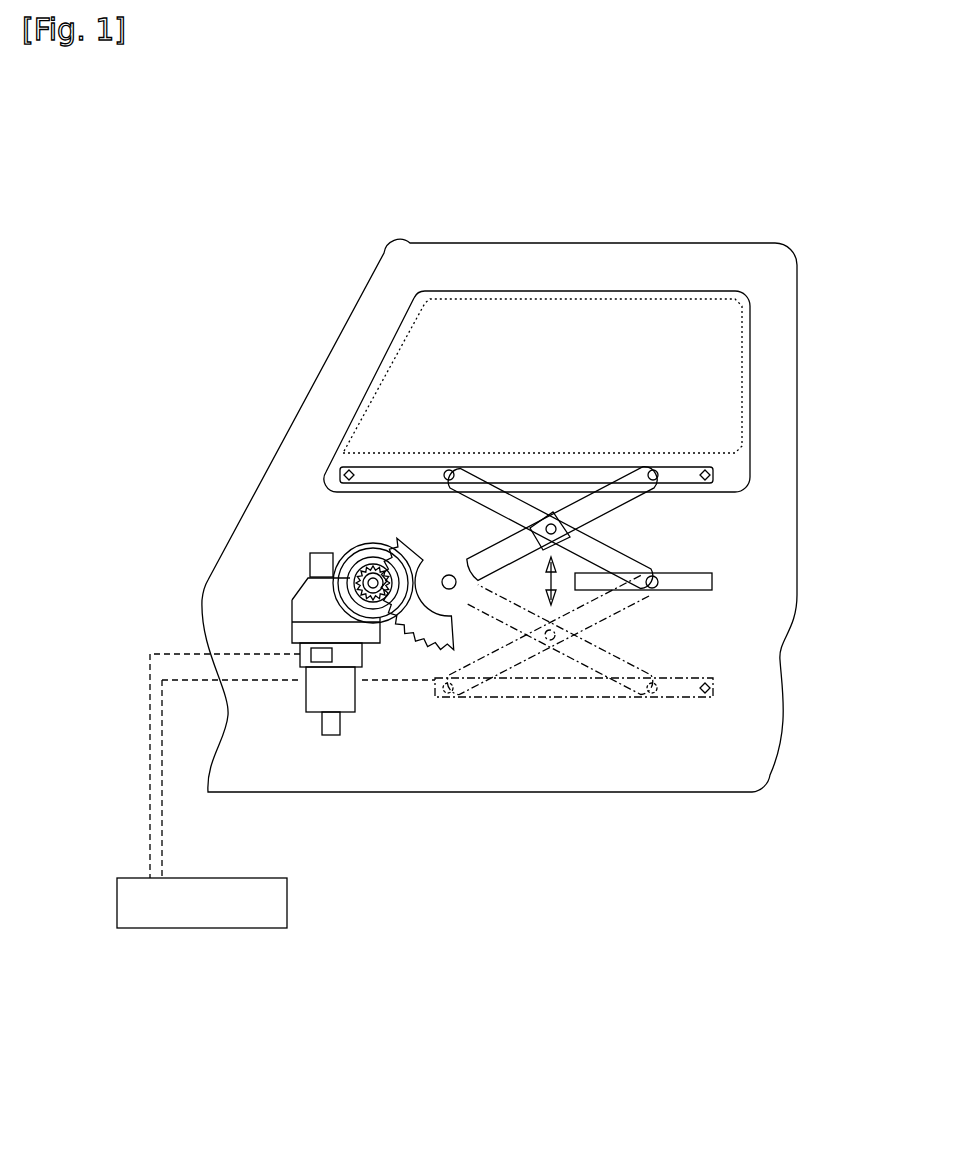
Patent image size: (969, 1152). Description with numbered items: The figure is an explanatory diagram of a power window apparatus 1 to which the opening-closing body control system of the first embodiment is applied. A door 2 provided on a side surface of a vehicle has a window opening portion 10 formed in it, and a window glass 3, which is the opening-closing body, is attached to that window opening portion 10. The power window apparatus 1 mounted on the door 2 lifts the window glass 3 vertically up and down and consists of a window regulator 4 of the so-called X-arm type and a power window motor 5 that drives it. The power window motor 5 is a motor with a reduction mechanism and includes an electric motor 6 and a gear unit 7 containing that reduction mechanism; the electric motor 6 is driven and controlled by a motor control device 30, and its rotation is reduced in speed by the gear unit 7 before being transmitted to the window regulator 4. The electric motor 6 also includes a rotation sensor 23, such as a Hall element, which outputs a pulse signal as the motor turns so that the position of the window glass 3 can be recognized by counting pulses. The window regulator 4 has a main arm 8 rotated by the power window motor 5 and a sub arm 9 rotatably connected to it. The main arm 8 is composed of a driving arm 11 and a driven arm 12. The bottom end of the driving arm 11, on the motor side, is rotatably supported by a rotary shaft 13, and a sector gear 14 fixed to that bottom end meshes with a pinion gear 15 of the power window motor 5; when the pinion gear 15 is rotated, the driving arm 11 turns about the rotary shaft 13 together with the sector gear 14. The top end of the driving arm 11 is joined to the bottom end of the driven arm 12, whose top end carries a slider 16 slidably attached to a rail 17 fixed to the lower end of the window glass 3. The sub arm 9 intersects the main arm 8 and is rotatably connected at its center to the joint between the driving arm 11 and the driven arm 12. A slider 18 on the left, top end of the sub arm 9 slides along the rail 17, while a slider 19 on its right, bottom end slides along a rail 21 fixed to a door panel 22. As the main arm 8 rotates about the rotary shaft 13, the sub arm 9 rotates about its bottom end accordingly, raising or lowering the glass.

The power window apparatus 1 is at (422, 716).
The door 2 is at (318, 375).
The window glass 3 is at (660, 335).
The window regulator 4 is at (652, 533).
The power window motor 5 is at (292, 635).
The electric motor 6 is at (308, 694).
The gear unit 7 is at (306, 586).
The main arm 8 is at (613, 402).
The sub arm 9 is at (595, 530).
The window opening portion 10 is at (750, 343).
The driving arm 11 is at (493, 543).
The driven arm 12 is at (617, 488).
The rotary shaft 13 is at (455, 588).
The sector gear 14 is at (420, 623).
The pinion gear 15 is at (347, 552).
The slider 16 is at (658, 470).
The rail 17 is at (500, 478).
The slider 18 is at (448, 468).
The slider 19 is at (660, 593).
The rail 21 is at (713, 578).
The door panel 22 is at (767, 683).
The rotation sensor 23 is at (330, 672).
The motor control device 30 is at (248, 912).